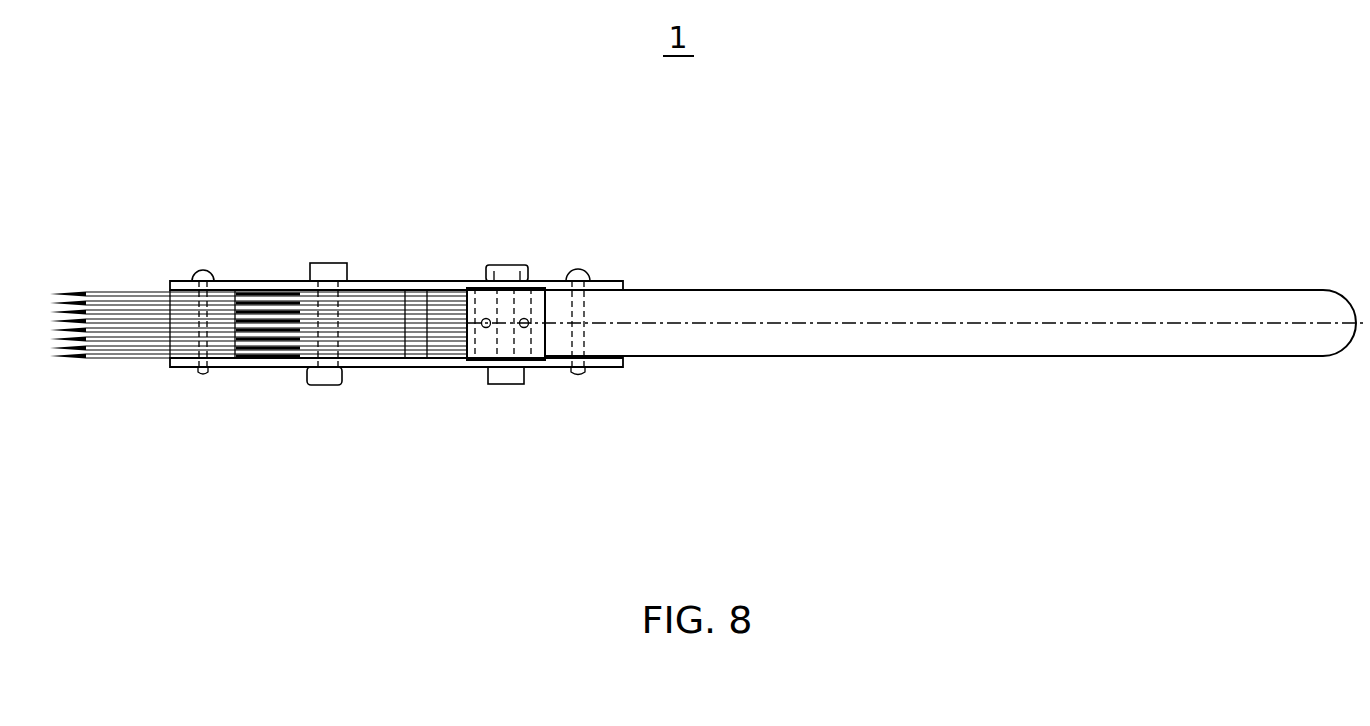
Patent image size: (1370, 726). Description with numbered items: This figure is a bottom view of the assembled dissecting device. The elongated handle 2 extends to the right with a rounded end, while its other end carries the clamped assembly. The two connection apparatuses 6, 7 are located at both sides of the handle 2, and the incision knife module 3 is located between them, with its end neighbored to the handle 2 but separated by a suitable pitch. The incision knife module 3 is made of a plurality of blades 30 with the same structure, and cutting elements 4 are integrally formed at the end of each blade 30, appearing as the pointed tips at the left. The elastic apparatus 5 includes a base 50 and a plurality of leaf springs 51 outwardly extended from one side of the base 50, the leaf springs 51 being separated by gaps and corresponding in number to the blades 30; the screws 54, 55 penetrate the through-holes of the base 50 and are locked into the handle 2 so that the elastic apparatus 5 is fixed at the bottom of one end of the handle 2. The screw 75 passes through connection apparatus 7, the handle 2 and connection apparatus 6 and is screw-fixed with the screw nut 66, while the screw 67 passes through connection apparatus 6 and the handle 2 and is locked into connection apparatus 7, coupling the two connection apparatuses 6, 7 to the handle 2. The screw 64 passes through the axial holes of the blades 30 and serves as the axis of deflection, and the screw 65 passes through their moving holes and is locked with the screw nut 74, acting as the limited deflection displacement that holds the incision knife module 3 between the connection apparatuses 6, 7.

The handle 2 is at (936, 300).
The incision knife module 3 is at (258, 313).
The cutting elements 4 is at (62, 360).
The elastic apparatus 5 is at (477, 368).
The connection apparatus 6 is at (404, 290).
The connection apparatus 7 is at (396, 368).
The blades 30 is at (133, 362).
The base 50 is at (517, 336).
The leaf springs 51 is at (437, 368).
The screw 54 is at (484, 319).
The screw 55 is at (527, 319).
The screw 64 is at (200, 272).
The screw 65 is at (337, 262).
The screw nut 66 is at (510, 265).
The screw 67 is at (578, 272).
The screw nut 74 is at (335, 392).
The screw 75 is at (507, 385).